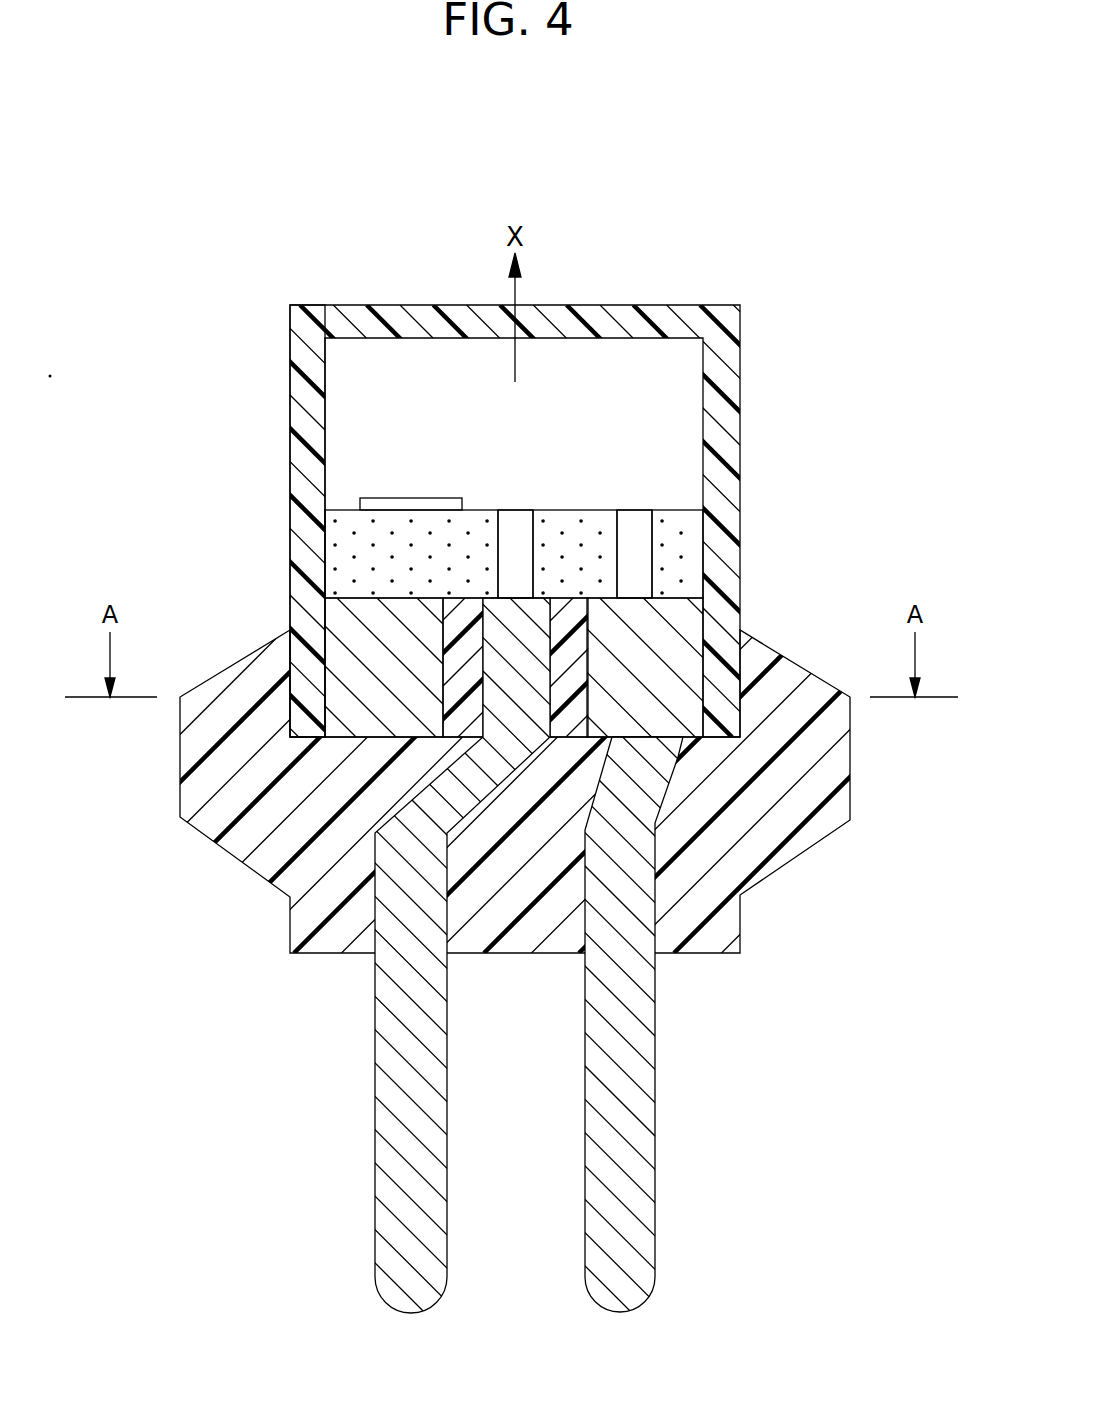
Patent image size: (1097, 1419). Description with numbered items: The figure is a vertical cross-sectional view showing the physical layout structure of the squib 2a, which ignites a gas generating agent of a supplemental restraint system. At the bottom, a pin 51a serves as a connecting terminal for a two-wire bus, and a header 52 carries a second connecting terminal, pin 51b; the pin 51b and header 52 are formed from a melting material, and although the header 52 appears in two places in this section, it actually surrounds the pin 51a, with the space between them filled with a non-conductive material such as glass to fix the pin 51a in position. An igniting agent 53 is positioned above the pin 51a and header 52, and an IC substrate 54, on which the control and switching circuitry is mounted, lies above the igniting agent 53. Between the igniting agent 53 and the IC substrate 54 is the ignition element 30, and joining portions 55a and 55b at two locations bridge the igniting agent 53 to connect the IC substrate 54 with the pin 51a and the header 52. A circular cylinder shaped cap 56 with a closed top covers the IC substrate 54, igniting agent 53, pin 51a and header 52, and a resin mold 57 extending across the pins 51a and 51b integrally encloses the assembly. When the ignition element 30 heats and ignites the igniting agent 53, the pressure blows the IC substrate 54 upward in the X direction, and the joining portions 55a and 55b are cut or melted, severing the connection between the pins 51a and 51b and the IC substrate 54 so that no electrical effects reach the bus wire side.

The squib 2a is at (660, 200).
The ignition element 30 is at (413, 503).
The pin 51a is at (412, 1160).
The pin 51b is at (635, 1167).
The header 52 is at (362, 617).
The igniting agent 53 is at (330, 556).
The IC substrate 54 is at (667, 372).
The joining portion 55a is at (517, 530).
The joining portion 55b is at (635, 530).
The cap 56 is at (305, 398).
The resin mold 57 is at (273, 857).